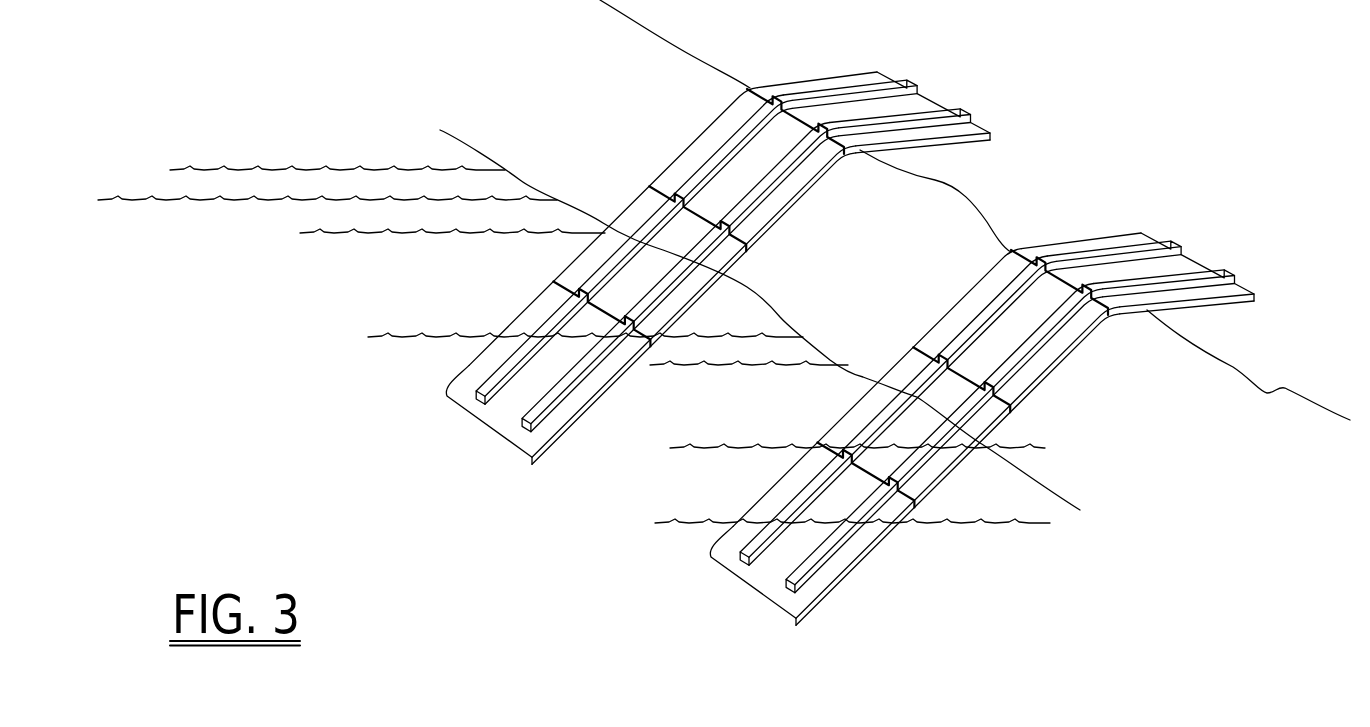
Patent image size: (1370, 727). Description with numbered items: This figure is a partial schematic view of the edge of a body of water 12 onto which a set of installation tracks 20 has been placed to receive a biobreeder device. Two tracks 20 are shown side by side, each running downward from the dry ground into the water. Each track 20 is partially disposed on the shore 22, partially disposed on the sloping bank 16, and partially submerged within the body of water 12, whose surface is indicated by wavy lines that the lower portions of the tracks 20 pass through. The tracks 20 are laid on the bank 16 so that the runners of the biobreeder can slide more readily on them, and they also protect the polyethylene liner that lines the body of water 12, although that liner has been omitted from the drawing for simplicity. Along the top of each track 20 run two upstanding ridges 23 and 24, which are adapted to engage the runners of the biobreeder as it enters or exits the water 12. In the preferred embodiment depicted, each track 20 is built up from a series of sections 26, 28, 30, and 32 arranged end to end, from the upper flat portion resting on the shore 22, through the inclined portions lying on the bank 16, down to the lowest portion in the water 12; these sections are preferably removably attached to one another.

The body of water 12 is at (715, 440).
The bank 16 is at (1275, 392).
The tracks 20 is at (858, 322).
The shore 22 is at (984, 208).
The upstanding ridge 23 is at (930, 90).
The upstanding ridge 24 is at (970, 113).
The section 26 is at (790, 90).
The section 28 is at (681, 162).
The section 30 is at (577, 265).
The section 32 is at (468, 372).